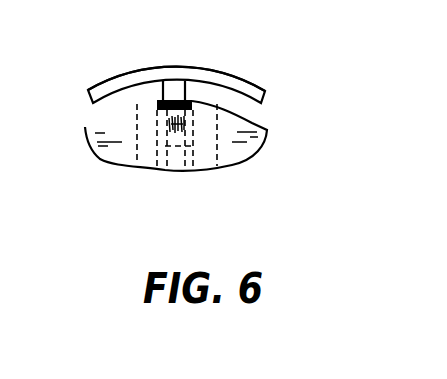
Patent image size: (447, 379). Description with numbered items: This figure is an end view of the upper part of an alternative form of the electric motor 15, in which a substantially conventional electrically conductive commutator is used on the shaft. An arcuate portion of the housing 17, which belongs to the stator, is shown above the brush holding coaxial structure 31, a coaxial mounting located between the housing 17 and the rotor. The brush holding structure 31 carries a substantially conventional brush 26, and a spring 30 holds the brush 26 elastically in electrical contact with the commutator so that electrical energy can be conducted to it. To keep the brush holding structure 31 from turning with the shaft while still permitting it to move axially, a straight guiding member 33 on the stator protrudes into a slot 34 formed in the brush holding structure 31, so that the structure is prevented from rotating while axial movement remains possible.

The electric motor 15 is at (268, 61).
The housing 17 is at (130, 74).
The straight guiding member 33 is at (176, 85).
The slot 34 is at (157, 101).
The brush holding coaxial structure 31 is at (258, 121).
The brush 26 is at (178, 150).
The spring 30 is at (181, 136).